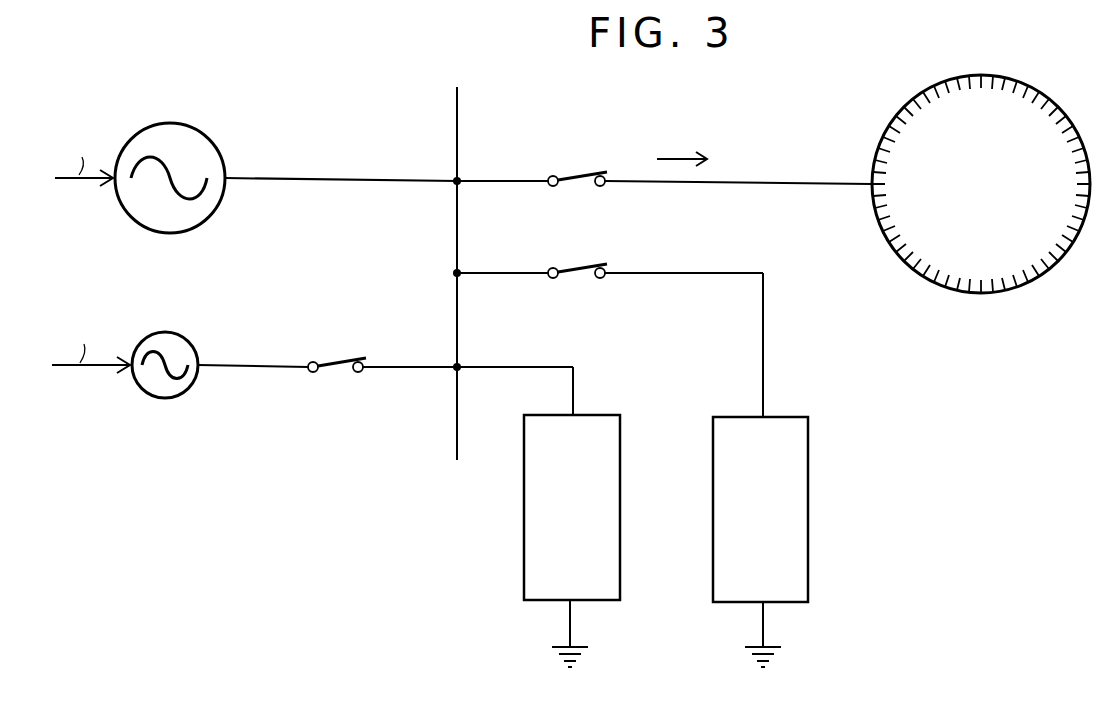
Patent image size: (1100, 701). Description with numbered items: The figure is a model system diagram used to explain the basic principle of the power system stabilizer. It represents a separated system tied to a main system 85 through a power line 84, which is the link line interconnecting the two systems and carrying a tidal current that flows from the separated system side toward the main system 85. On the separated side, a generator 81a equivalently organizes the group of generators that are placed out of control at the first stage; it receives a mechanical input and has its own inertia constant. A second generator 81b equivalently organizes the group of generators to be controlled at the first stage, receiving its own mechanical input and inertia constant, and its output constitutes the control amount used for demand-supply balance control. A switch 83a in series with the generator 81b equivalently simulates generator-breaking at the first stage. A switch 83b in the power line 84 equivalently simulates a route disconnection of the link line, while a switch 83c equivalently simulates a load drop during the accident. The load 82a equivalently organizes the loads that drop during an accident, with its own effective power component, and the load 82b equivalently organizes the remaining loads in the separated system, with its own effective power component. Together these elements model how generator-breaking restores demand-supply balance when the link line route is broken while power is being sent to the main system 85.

The generator 81a is at (173, 132).
The generator 81b is at (172, 341).
The switch 83a is at (350, 336).
The switch 83b is at (578, 173).
The switch 83c is at (598, 250).
The power line 84 is at (803, 151).
The main system 85 is at (910, 105).
The load 82a is at (806, 440).
The load 82b is at (616, 440).